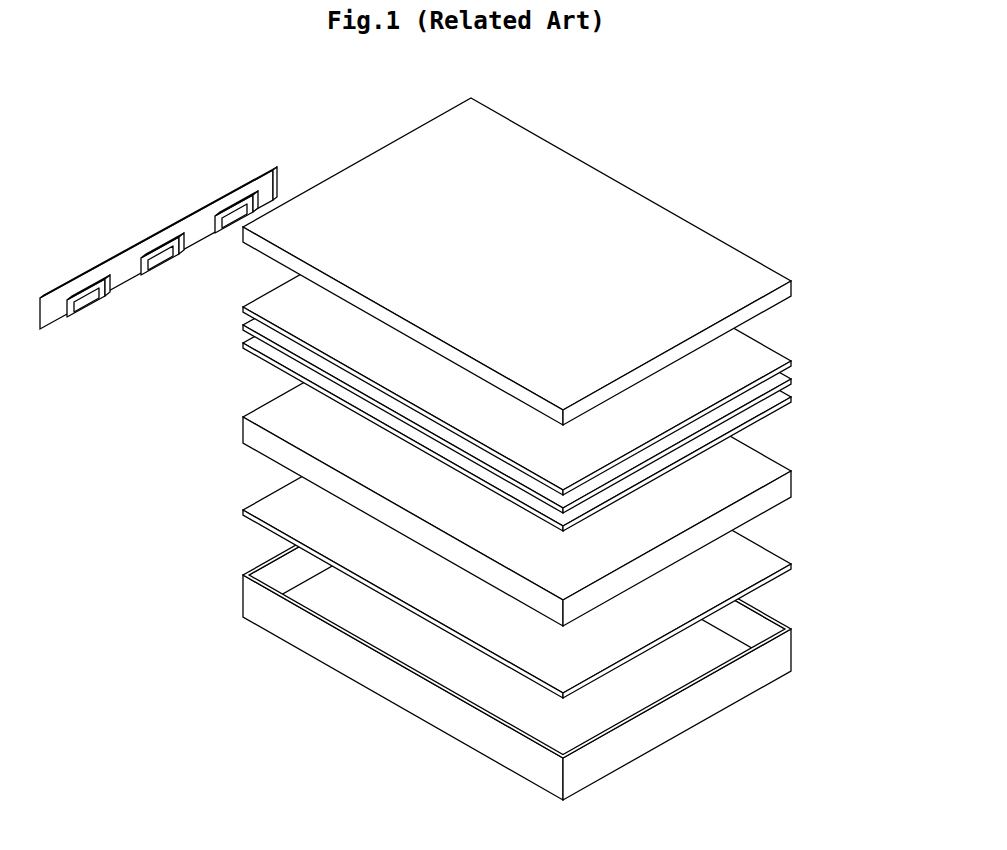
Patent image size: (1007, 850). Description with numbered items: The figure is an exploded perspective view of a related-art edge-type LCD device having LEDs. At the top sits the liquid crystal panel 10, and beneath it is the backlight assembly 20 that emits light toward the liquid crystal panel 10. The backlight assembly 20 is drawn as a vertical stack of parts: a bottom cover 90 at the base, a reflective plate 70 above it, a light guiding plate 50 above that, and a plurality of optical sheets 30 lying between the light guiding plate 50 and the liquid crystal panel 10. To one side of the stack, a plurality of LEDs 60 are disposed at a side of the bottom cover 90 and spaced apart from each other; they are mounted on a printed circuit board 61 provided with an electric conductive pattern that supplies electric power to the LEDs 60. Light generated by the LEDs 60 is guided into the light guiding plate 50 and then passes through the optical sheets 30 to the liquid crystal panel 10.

The liquid crystal panel 10 is at (794, 283).
The backlight assembly 20 is at (567, 489).
The optical sheets 30 is at (541, 354).
The light guiding plate 50 is at (793, 480).
The LEDs 60 is at (238, 203).
The printed circuit board 61 is at (270, 170).
The reflective plate 70 is at (794, 563).
The bottom cover 90 is at (792, 647).